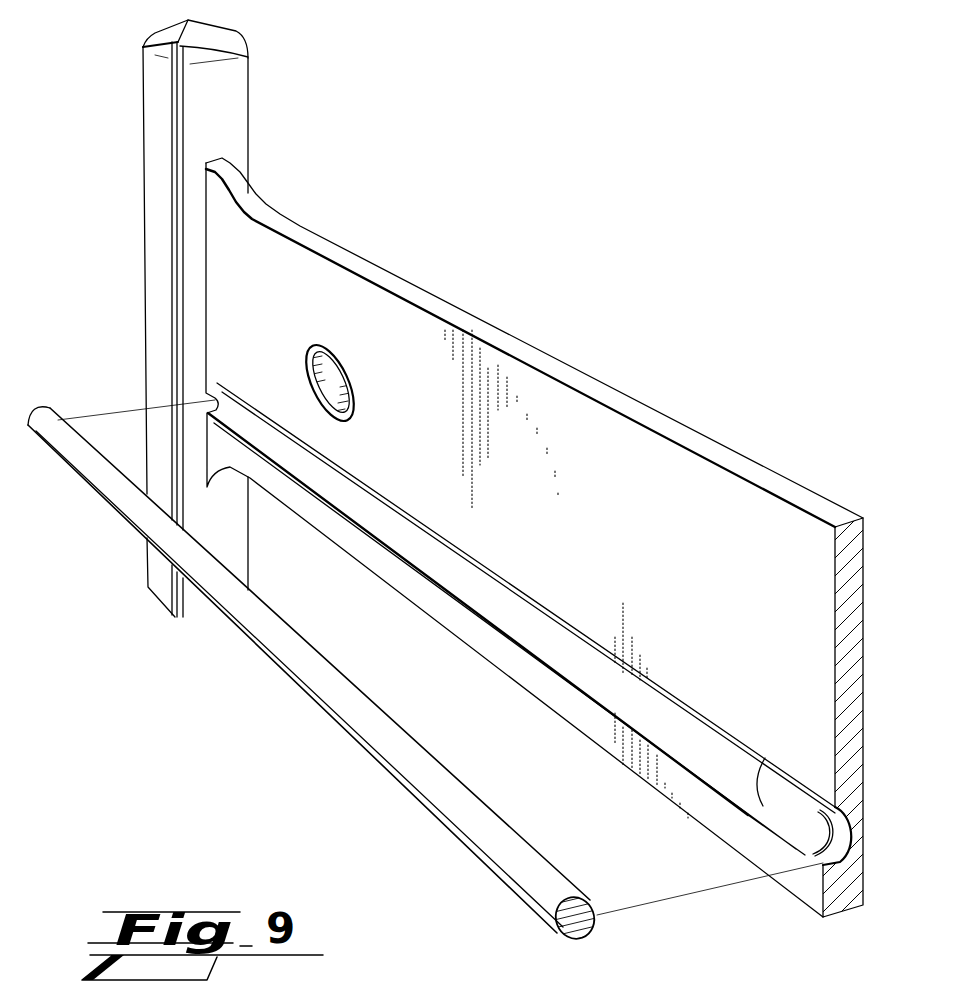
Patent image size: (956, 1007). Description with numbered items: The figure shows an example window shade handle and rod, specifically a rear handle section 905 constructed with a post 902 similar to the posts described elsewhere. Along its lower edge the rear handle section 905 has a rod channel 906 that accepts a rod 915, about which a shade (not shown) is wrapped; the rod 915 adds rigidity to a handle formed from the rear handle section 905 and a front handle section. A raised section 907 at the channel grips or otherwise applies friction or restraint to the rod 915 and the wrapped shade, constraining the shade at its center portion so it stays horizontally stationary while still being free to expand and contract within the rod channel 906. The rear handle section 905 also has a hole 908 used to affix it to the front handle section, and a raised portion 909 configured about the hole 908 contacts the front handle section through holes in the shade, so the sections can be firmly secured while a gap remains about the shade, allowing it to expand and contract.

The post 902 is at (247, 128).
The rear handle section 905 is at (343, 248).
The rod channel 906 is at (407, 537).
The raised section 907 is at (772, 807).
The hole 908 is at (313, 345).
The raised portion 909 is at (341, 423).
The rod 915 is at (334, 720).